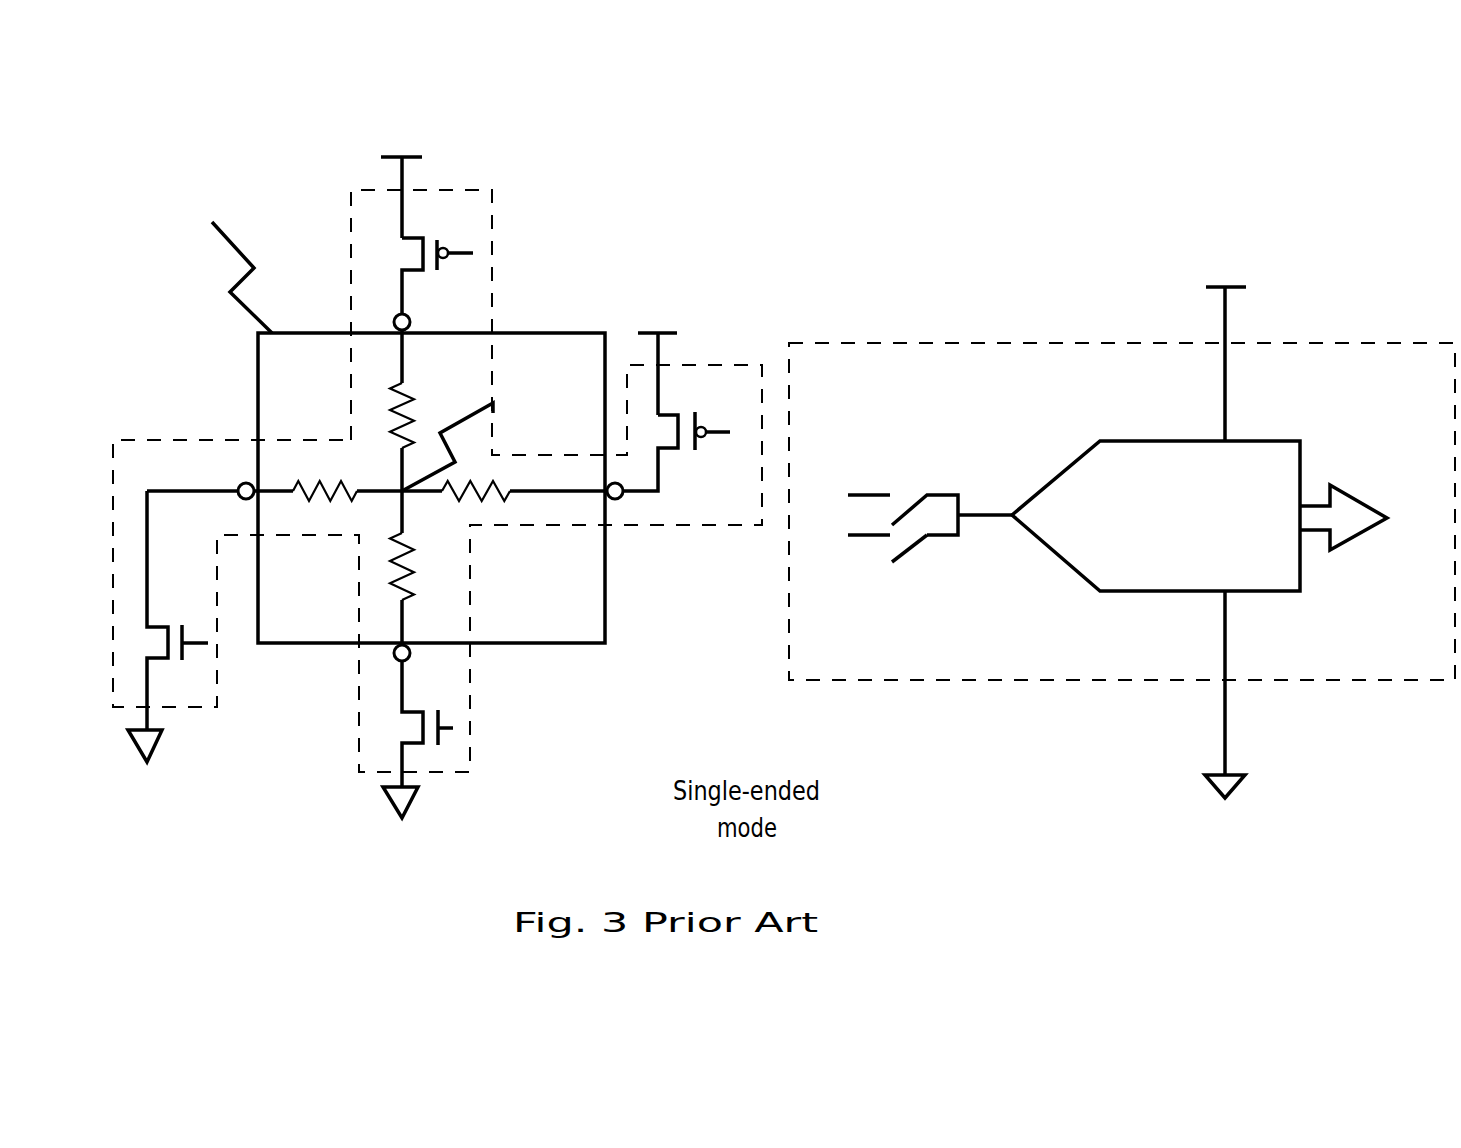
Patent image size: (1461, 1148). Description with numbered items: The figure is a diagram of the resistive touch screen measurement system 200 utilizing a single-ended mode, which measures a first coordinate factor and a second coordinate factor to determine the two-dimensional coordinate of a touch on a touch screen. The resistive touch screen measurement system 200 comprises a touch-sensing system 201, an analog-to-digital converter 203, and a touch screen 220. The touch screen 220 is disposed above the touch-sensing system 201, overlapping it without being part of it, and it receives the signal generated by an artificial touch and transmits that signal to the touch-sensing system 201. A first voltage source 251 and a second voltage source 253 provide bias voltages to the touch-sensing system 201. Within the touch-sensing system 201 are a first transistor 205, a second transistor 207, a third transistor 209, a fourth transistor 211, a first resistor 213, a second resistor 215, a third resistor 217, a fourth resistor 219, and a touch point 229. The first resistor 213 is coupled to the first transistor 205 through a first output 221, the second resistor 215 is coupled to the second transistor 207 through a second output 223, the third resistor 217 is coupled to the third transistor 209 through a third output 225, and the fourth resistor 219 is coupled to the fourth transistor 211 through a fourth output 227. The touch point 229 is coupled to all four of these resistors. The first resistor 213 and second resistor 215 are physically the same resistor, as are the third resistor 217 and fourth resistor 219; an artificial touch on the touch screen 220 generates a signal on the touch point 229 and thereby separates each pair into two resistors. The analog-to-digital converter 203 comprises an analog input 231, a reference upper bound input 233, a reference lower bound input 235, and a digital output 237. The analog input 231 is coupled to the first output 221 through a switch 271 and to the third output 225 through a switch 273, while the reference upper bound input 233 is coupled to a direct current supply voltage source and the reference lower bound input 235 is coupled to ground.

The resistive touch screen measurement system 200 is at (922, 184).
The touch-sensing system 201 is at (158, 437).
The analog-to-digital converter 203 is at (873, 672).
The first transistor 205 is at (418, 276).
The second transistor 207 is at (409, 724).
The third transistor 209 is at (676, 451).
The fourth transistor 211 is at (163, 610).
The first resistor 213 is at (423, 431).
The second resistor 215 is at (423, 589).
The third resistor 217 is at (524, 503).
The fourth resistor 219 is at (348, 507).
The touch screen 220 is at (237, 247).
The first output 221 is at (411, 323).
The second output 223 is at (411, 654).
The third output 225 is at (619, 502).
The fourth output 227 is at (240, 503).
The touch point 229 is at (470, 412).
The analog input 231 is at (1057, 530).
The reference upper bound input 233 is at (1194, 459).
The reference lower bound input 235 is at (1199, 582).
The digital output 237 is at (1414, 554).
The first voltage source 251 is at (403, 157).
The second voltage source 253 is at (159, 740).
The switch 271 is at (899, 505).
The switch 273 is at (908, 552).